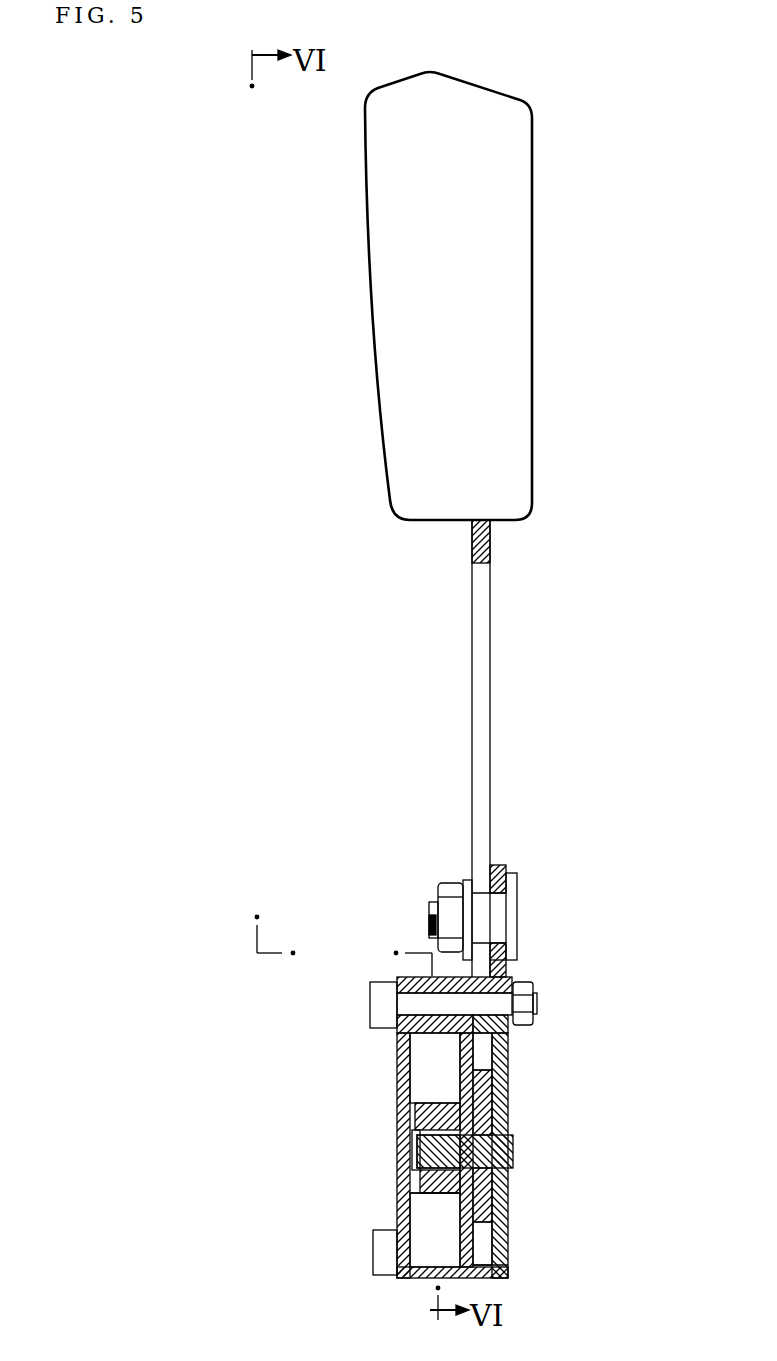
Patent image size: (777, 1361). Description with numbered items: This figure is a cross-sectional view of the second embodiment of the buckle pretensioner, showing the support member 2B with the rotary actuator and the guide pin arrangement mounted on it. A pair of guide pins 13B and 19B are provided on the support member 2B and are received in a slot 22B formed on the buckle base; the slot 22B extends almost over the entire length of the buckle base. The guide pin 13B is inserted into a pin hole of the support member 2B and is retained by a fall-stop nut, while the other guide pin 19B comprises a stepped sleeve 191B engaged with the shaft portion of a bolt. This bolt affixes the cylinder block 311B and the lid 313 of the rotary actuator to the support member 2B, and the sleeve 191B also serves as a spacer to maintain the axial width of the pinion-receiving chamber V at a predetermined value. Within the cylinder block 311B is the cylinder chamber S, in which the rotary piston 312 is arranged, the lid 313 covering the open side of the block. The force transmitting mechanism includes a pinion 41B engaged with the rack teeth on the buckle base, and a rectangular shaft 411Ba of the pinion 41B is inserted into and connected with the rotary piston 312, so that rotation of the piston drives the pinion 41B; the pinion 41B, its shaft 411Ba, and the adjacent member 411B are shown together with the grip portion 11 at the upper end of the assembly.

The handle grip 11 is at (520, 318).
The slot 22B is at (483, 626).
The guide pin 13B is at (496, 907).
The stepped sleeve 191B is at (500, 977).
The guide pin 19B is at (371, 991).
The support member 2B is at (508, 1055).
The lid 313 is at (399, 1068).
The rotary piston 312 is at (410, 1097).
The engaging plate 411B is at (495, 1145).
The rectangular shaft 411Ba is at (410, 1156).
The pinion 41B is at (497, 1195).
The cylinder block 311B is at (500, 1252).
The pinion-receiving chamber V is at (505, 1268).
The cylinder chamber S is at (420, 1262).